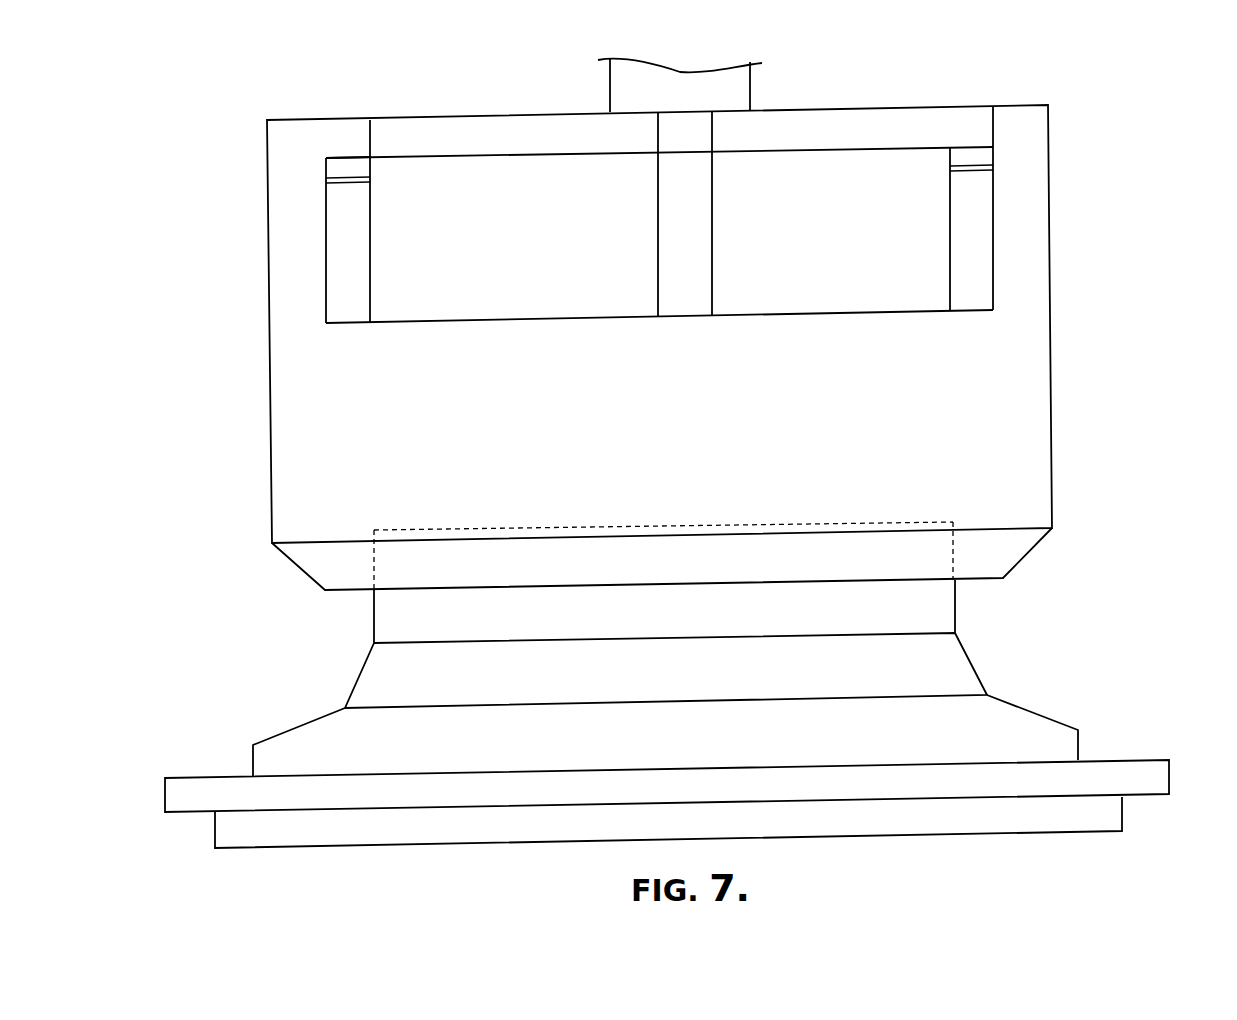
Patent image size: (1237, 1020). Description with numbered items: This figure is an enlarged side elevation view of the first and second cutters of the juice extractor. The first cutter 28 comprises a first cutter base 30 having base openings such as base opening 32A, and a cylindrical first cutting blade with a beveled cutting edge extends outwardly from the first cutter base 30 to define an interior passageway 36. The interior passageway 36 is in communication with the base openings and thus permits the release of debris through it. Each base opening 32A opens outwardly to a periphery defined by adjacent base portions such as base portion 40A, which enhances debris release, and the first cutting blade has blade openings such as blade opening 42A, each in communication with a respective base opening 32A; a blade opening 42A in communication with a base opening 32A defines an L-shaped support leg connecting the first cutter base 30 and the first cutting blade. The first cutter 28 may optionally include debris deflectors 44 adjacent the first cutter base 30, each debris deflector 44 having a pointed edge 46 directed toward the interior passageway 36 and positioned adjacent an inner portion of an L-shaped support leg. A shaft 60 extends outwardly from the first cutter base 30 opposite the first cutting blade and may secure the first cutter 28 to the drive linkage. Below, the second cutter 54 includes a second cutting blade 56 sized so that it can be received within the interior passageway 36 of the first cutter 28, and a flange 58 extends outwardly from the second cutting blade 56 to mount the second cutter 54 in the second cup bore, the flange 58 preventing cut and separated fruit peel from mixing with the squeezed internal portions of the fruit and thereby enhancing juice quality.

The first cutter 28 is at (1100, 129).
The first cutter base 30 is at (847, 108).
The base opening 32A is at (393, 145).
The interior passageway 36 is at (353, 307).
The base portion 40A is at (350, 118).
The blade opening 42A is at (395, 238).
The debris deflector 44 is at (321, 160).
The pointed edge 46 is at (340, 183).
The second cutter 54 is at (1049, 685).
The second cutting blade 56 is at (362, 670).
The flange 58 is at (287, 728).
The shaft 60 is at (750, 80).